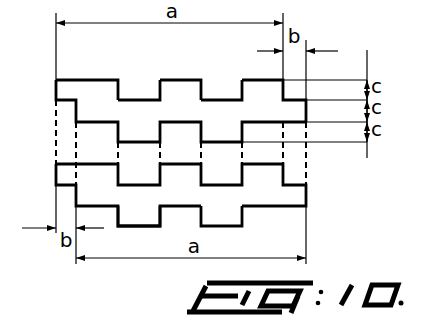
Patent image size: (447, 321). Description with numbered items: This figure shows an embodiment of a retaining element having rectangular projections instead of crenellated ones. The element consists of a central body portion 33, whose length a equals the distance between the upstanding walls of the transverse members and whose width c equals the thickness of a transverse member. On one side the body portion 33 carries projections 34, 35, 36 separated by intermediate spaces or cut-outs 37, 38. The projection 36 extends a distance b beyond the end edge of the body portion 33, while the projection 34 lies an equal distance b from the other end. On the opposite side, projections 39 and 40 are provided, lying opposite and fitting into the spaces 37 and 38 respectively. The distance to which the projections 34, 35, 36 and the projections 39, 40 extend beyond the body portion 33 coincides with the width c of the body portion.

The central body portion 33 is at (90, 112).
The projection 34 is at (262, 88).
The projection 35 is at (183, 88).
The projection 36 is at (95, 85).
The intermediate space 37 is at (212, 92).
The intermediate space 38 is at (141, 91).
The projection 39 is at (133, 216).
The projection 40 is at (236, 220).